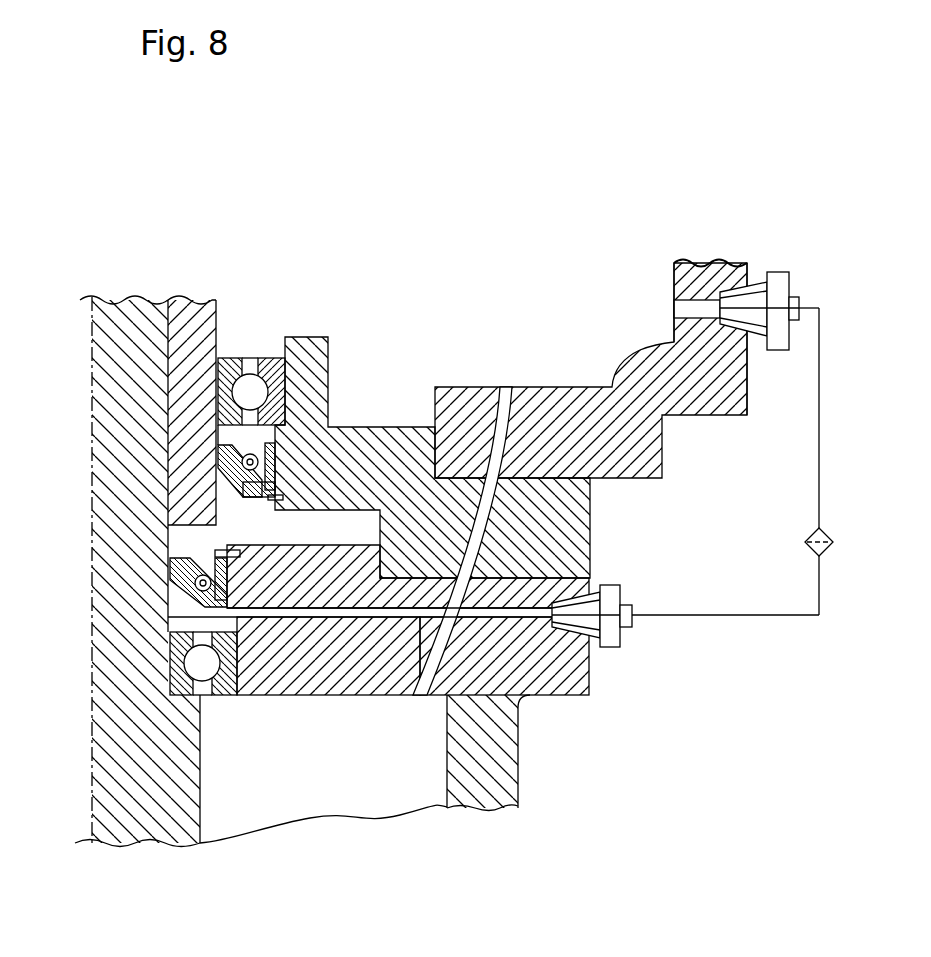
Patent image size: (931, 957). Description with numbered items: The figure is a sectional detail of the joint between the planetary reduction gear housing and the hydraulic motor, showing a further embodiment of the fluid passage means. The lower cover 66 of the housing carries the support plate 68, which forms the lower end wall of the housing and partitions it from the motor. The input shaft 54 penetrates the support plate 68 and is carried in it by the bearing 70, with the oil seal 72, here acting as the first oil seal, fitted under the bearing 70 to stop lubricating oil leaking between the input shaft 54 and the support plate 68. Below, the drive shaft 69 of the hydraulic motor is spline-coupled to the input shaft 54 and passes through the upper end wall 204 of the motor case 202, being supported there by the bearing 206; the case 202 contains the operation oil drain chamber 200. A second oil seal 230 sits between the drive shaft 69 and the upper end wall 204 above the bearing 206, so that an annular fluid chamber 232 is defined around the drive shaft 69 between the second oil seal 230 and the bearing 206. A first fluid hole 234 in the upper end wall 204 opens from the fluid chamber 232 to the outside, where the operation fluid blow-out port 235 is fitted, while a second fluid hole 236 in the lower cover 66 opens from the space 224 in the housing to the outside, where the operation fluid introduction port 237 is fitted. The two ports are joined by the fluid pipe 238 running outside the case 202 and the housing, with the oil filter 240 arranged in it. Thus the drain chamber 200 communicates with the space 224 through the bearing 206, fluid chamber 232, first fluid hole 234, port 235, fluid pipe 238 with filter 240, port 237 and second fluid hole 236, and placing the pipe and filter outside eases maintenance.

The input shaft 54 is at (195, 297).
The drive shaft 69 is at (135, 798).
The bearing 70 is at (244, 358).
The oil seal 72 is at (232, 477).
The support plate 68 is at (394, 452).
The lower cover 66 is at (578, 400).
The second fluid hole 236 is at (688, 265).
The operation fluid introduction port 237 is at (777, 272).
The oil filter 240 is at (810, 535).
The fluid pipe 238 is at (712, 613).
The operation fluid blow-out port 235 is at (612, 647).
The second oil seal 230 is at (168, 545).
The fluid chamber 232 is at (192, 615).
The upper end wall 204 is at (537, 668).
The first fluid hole 234 is at (362, 693).
The bearing 206 is at (215, 697).
The case 202 is at (487, 793).
The drain chamber 200 is at (320, 786).
The space 224 is at (357, 247).